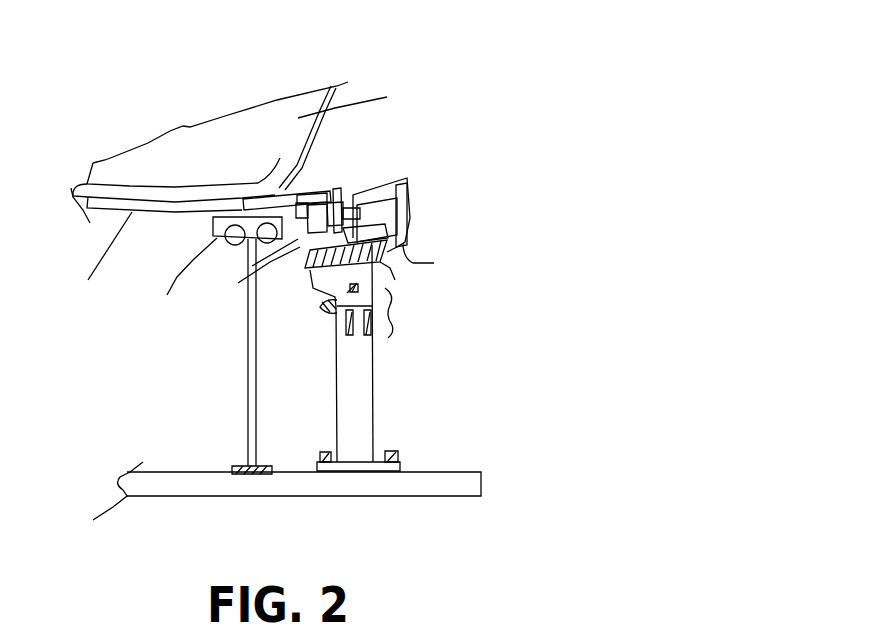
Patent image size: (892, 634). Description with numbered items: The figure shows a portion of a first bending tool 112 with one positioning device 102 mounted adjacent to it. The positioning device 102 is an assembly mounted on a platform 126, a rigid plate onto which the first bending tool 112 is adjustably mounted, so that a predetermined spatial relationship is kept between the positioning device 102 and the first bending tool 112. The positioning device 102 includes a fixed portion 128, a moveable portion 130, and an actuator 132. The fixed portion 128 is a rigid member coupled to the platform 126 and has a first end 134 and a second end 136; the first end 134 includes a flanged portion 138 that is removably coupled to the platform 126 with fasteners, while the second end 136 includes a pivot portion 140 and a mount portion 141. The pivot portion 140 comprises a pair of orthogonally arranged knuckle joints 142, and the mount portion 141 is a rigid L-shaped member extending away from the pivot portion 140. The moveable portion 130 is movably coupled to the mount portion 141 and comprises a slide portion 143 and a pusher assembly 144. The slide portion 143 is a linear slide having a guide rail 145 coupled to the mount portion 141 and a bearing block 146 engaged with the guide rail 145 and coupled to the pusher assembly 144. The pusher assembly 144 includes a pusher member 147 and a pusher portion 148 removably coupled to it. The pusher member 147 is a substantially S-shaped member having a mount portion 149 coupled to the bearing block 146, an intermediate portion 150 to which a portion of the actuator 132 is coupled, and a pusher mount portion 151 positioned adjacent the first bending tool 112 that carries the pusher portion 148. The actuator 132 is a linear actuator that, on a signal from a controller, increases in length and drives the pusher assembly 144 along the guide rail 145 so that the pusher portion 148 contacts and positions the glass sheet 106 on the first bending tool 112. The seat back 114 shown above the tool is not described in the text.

The positioning device 102 is at (457, 58).
The glass sheet 106 is at (171, 234).
The first bending tool 112 is at (178, 281).
The seat back 114 is at (387, 97).
The platform 126 is at (470, 483).
The fixed portion 128 is at (452, 315).
The moveable portion 130 is at (372, 172).
The actuator 132 is at (398, 186).
The first end 134 is at (362, 441).
The second end 136 is at (426, 247).
The flanged portion 138 is at (400, 462).
The pivot portion 140 is at (389, 313).
The mount portion 141 is at (428, 264).
The knuckle joint 142 is at (320, 308).
The slide portion 143 is at (253, 356).
The pusher assembly 144 is at (326, 195).
The guide rail 145 is at (408, 218).
The bearing block 146 is at (247, 262).
The pusher member 147 is at (351, 213).
The pusher portion 148 is at (280, 188).
The mount portion 149 is at (380, 282).
The intermediate portion 150 is at (295, 185).
The pusher mount portion 151 is at (312, 186).